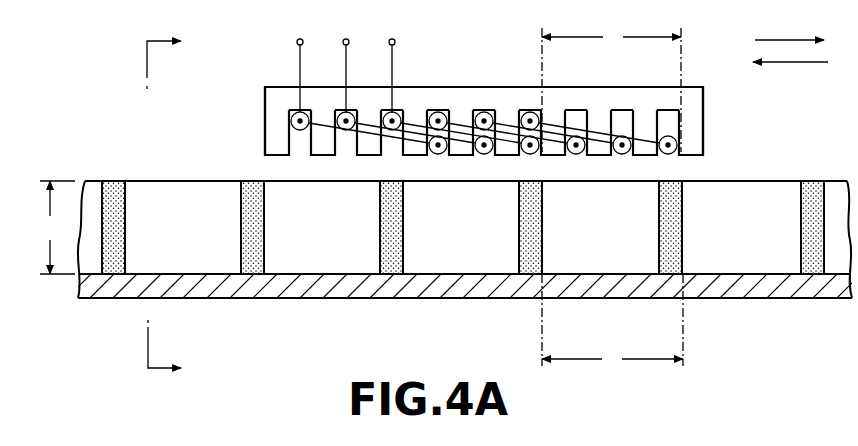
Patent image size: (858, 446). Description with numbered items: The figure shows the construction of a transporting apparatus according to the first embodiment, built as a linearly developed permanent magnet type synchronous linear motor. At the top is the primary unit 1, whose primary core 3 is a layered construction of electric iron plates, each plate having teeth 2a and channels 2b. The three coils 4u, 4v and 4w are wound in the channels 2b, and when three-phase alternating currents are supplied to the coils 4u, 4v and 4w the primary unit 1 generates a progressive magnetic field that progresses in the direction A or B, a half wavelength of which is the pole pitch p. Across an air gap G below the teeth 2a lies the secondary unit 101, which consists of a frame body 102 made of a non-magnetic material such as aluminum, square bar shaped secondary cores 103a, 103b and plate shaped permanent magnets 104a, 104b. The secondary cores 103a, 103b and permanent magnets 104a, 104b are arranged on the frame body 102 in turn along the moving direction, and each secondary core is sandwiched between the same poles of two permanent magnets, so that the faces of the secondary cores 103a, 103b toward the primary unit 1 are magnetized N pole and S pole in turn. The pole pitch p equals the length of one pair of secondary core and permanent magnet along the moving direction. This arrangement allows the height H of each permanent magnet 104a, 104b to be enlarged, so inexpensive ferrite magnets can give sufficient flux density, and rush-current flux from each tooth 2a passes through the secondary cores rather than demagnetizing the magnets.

The primary unit 1 is at (278, 68).
The teeth 2a is at (298, 150).
The channels 2b is at (273, 148).
The primary core 3 is at (695, 86).
The coil 4u is at (453, 128).
The coil 4v is at (493, 118).
The coil 4w is at (552, 112).
The air gap G is at (700, 167).
The secondary unit 101 is at (788, 313).
The frame body 102 is at (317, 292).
The secondary core 103a is at (148, 180).
The secondary core 103b is at (270, 180).
The permanent magnet 104a is at (112, 180).
The permanent magnet 104b is at (237, 180).